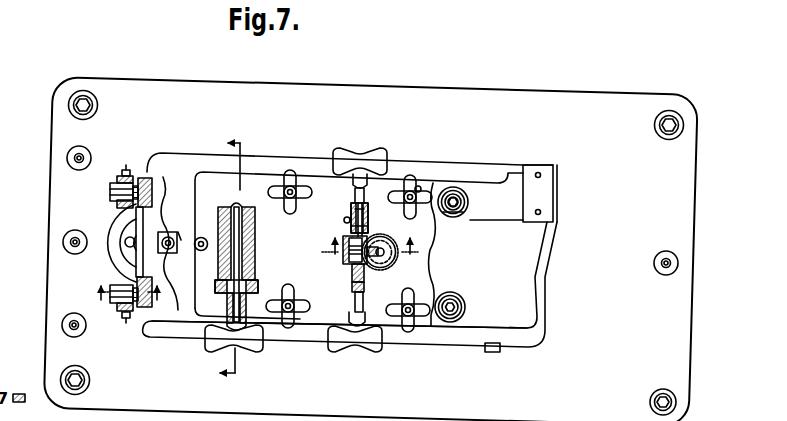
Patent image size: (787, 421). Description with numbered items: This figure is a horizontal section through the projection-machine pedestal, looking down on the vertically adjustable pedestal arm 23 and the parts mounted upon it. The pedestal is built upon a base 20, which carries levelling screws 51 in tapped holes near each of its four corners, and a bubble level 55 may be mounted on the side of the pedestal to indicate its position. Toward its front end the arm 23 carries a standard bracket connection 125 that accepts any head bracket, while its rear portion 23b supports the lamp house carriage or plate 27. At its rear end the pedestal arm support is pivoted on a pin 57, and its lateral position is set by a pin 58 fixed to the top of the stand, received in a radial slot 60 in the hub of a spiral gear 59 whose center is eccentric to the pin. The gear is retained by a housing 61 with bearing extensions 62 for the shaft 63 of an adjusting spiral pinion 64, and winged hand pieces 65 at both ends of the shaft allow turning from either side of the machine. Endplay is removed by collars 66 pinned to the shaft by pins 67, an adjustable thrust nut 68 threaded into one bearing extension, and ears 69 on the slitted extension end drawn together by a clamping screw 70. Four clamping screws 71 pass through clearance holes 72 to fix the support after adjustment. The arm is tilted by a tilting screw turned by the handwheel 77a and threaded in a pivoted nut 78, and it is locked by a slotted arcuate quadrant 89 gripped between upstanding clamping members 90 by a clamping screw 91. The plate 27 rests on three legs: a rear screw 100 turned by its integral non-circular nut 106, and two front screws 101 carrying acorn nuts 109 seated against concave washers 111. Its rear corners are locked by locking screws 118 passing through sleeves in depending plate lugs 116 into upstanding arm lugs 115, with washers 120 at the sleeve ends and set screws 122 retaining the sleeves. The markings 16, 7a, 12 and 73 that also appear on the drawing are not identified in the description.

The base 20 is at (548, 92).
The levelling screws 51 is at (89, 103).
The pedestal arm 23 is at (533, 249).
The rear portion 23b is at (164, 181).
The non-circular flange or nut 106 is at (181, 232).
The standard bracket connection 125 is at (545, 192).
The bubble level 55 is at (320, 342).
The clip 73 is at (492, 353).
The section line 16- 16 is at (233, 260).
The depending lugs 116 is at (139, 176).
The set screws 122 is at (127, 168).
The washers 120 is at (124, 177).
The locking screws 118 is at (108, 194).
The upstanding lugs 115 is at (148, 286).
The lamp house carriage or plate 27 is at (140, 314).
The handwheel 77a is at (89, 223).
The pivoted nut 78 is at (110, 258).
The section line 7a- 7a is at (128, 297).
The rear screw 100 is at (167, 231).
The pin 57 is at (208, 231).
The slotted arcuate quadrant 89 is at (252, 255).
The clamping members 90 is at (242, 206).
The clamping screw 91 is at (239, 238).
The winged hand pieces 65 is at (380, 154).
The clamping screws 71 is at (292, 170).
The clearance holes 72 is at (421, 188).
The pin 67 is at (364, 199).
The adjustable thrust nut 68 is at (351, 213).
The collar 66 is at (355, 208).
The clamping screw 70 is at (344, 220).
The ears 69 is at (351, 225).
The radial slot 60 is at (367, 224).
The adjusting spiral pinion 64 is at (344, 252).
The bearing extensions 62 is at (352, 275).
The shaft 63 is at (355, 307).
The pin 58 is at (381, 246).
The housing 61 is at (396, 266).
The spiral gear 59 is at (391, 247).
The direction arrow 12 is at (372, 247).
The front screws 101 is at (457, 192).
The acorn nuts 109 is at (468, 202).
The washers 111 is at (460, 213).